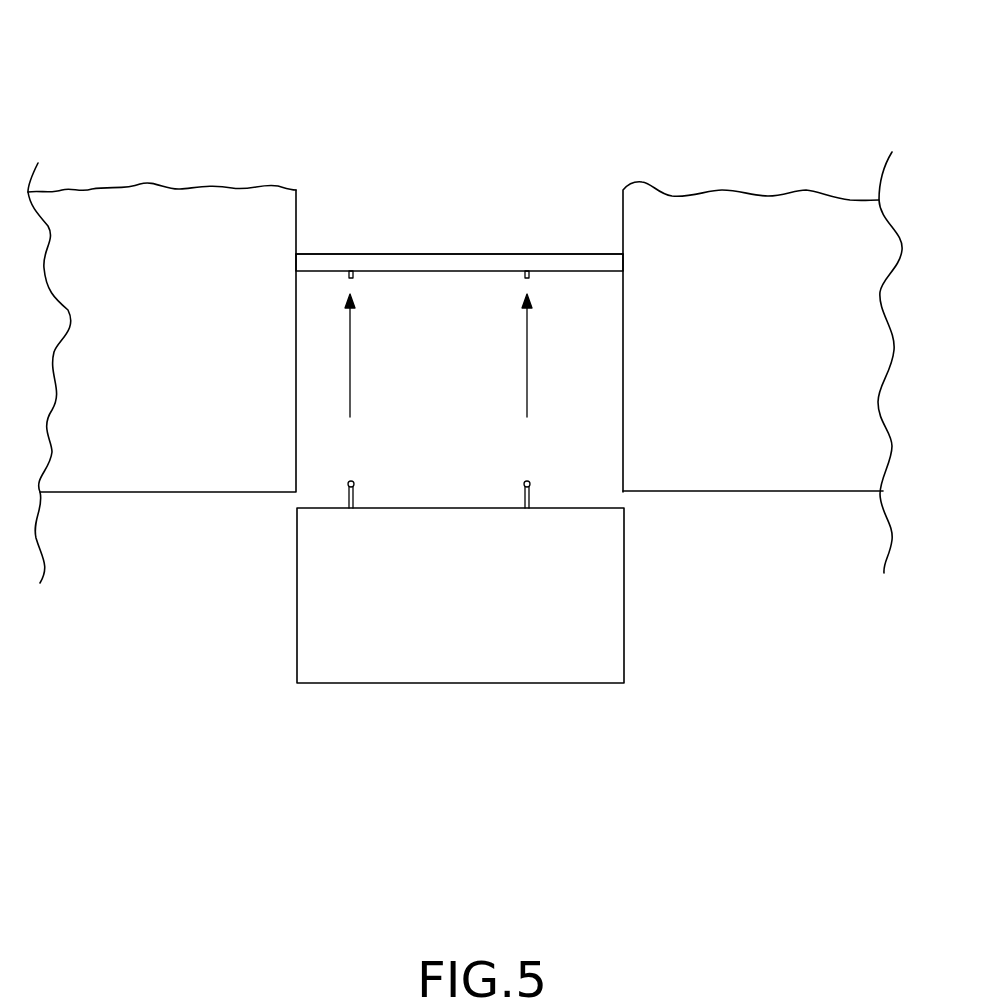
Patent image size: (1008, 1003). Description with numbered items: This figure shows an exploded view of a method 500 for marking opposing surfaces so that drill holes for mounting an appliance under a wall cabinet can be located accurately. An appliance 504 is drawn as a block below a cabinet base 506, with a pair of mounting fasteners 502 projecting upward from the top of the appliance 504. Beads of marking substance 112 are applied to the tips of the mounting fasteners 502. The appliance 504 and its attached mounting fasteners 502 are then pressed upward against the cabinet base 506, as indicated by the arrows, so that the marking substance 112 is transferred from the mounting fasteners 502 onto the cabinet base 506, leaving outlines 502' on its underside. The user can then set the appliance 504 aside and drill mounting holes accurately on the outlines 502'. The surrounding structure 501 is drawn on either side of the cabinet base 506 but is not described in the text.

The method 500 is at (158, 118).
The substrate / wafer 501 is at (118, 243).
The cabinet base 506 is at (432, 262).
The outlines 502' is at (482, 344).
The marking substance 112 is at (355, 483).
The mounting fasteners 502 is at (487, 489).
The appliance 504 is at (614, 620).